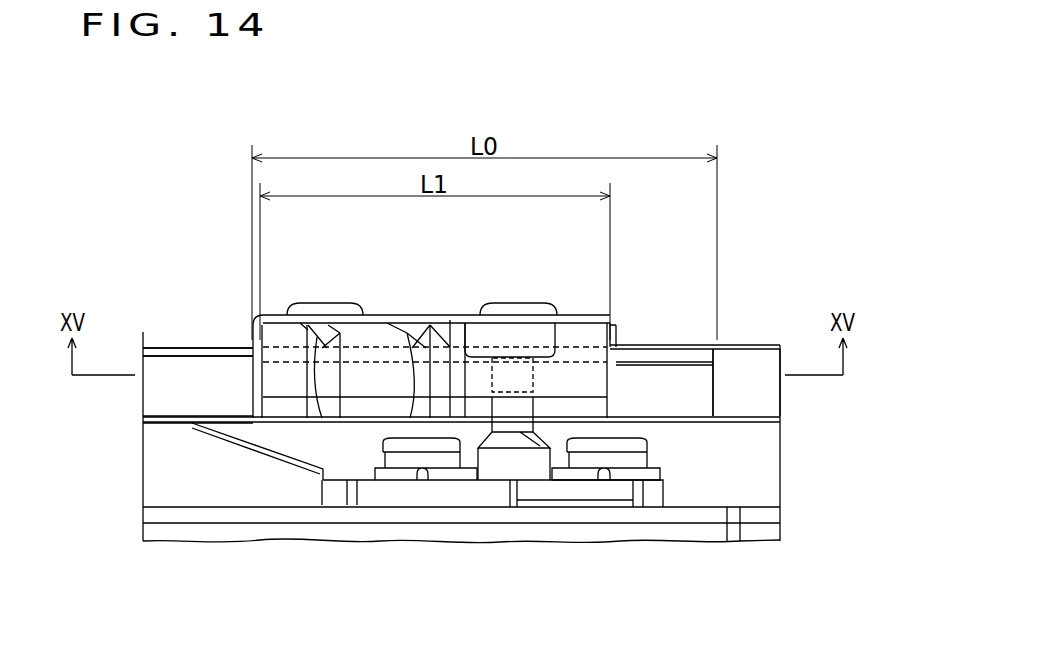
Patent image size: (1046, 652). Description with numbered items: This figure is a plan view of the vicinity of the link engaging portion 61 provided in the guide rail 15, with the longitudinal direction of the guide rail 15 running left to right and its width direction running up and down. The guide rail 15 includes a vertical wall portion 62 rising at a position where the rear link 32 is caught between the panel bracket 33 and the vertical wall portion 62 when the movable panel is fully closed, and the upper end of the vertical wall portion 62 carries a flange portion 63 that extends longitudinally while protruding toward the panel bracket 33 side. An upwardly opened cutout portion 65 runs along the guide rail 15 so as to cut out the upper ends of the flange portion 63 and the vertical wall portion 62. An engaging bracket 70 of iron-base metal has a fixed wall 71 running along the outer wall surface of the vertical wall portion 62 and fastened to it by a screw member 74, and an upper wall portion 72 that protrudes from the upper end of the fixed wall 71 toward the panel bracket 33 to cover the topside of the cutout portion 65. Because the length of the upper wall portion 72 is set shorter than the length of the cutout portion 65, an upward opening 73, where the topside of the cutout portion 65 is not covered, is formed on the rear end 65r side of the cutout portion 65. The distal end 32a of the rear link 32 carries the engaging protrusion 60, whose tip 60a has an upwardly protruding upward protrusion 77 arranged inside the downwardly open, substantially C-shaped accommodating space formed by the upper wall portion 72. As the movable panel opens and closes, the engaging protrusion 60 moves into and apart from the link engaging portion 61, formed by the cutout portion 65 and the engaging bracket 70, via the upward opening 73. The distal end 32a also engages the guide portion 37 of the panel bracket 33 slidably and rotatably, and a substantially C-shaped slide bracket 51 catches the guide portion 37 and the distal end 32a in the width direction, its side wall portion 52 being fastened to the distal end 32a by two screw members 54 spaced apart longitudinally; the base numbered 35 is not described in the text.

The flange portion 63 is at (160, 378).
The guide rail 15 is at (198, 322).
The vertical wall portion 62 is at (207, 348).
The engaging bracket 70 is at (431, 272).
The fixed wall 71 is at (441, 318).
The engaging protrusion 60 is at (430, 366).
The tip 60a is at (430, 366).
The upward protrusion 77 is at (507, 315).
The screw member 74 is at (362, 312).
The link engaging portion 61 is at (540, 336).
The upper wall portion 72 is at (413, 373).
The cutout portion 65 is at (655, 347).
The upward opening 73 is at (662, 381).
The rear end 65r is at (710, 386).
The screw member 54 is at (385, 442).
The slide bracket 51 is at (562, 465).
The side wall portion 52 is at (660, 468).
The distal end 32a is at (658, 494).
The rear link 32 is at (461, 554).
The base plate 35 is at (257, 510).
The panel bracket 33 is at (791, 496).
The guide portion 37 is at (768, 504).